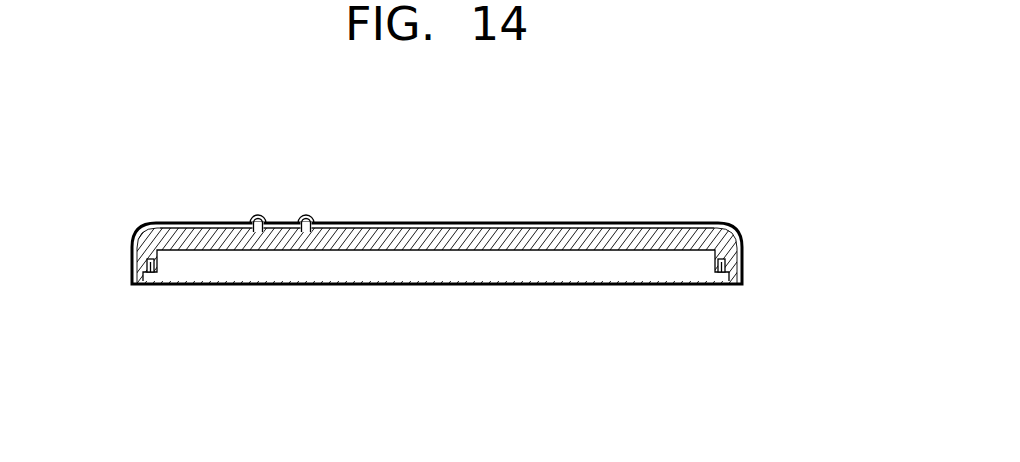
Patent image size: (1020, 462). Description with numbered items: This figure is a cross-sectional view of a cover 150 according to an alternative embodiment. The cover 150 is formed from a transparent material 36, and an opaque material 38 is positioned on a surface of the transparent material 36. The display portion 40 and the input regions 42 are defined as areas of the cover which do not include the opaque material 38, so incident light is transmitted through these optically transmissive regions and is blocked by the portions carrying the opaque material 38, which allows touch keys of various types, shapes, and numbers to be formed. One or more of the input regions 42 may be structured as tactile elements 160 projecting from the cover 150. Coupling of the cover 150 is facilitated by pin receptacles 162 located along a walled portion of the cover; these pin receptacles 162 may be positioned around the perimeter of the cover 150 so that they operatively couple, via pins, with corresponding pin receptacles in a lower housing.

The cover 150 is at (744, 203).
The opaque material 38 is at (630, 222).
The display portion 40 is at (466, 222).
The input regions 42 is at (212, 222).
The transparent material 36 is at (427, 250).
The tactile elements 160 is at (305, 214).
The pin receptacles 162 is at (150, 274).